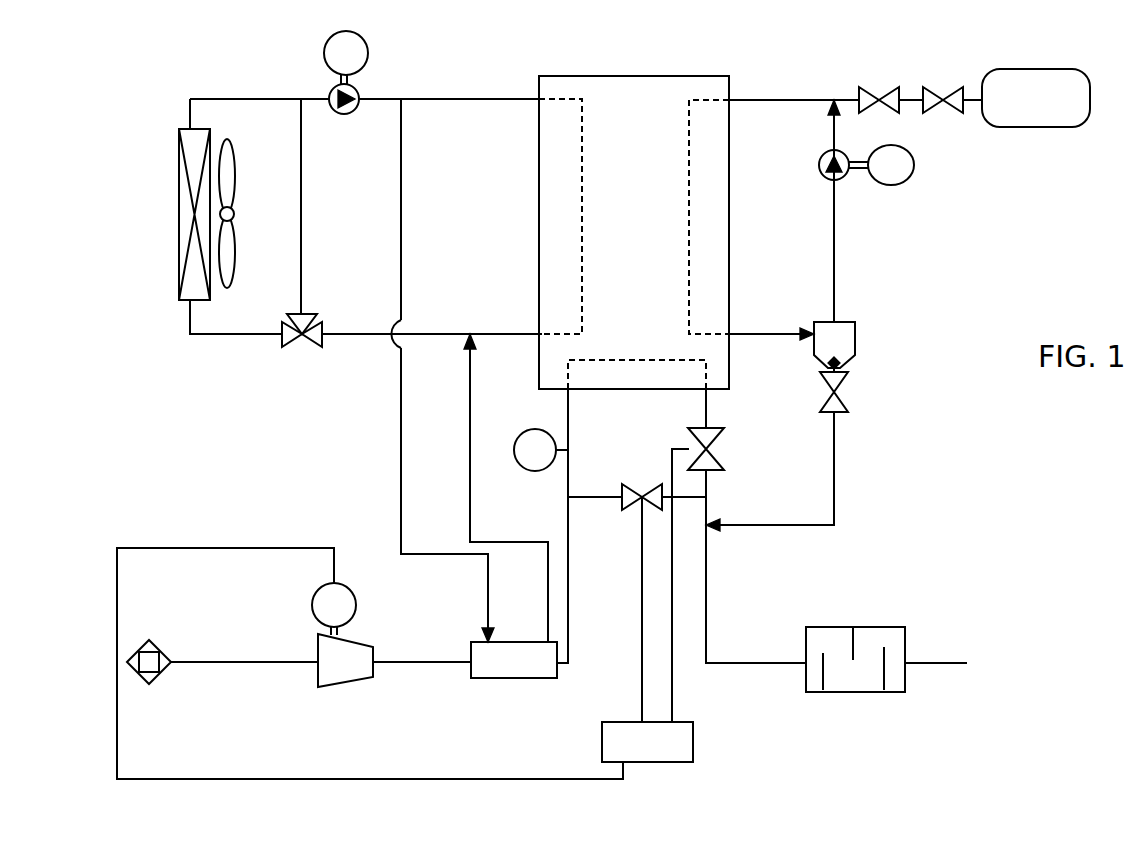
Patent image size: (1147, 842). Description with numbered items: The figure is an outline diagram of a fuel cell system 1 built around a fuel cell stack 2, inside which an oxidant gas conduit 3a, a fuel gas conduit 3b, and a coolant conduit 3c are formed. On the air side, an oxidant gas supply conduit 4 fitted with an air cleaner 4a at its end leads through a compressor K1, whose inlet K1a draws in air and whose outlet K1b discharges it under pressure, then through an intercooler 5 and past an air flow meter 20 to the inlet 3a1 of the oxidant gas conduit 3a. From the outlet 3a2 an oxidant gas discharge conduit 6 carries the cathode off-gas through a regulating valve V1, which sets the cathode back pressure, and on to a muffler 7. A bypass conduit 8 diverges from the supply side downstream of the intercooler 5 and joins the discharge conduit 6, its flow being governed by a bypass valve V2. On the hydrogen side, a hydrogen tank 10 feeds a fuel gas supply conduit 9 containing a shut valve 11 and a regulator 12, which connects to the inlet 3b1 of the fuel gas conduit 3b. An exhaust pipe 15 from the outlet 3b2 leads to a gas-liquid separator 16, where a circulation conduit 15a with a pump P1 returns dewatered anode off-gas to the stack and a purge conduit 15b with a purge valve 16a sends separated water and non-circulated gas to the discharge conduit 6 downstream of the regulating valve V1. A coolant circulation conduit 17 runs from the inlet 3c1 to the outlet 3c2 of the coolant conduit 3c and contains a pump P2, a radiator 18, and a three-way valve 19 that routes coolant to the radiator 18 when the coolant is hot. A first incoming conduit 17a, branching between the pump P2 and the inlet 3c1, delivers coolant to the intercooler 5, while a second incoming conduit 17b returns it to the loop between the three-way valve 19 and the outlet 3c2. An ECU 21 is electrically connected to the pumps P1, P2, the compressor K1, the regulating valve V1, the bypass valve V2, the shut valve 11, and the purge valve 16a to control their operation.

The fuel cell system 1 is at (1031, 775).
The fuel cell stack 2 is at (729, 76).
The oxidant gas conduit 3a is at (618, 358).
The fuel gas conduit 3b is at (692, 193).
The coolant conduit 3c is at (583, 223).
The inlet of the oxidant gas conduit 3a1 is at (568, 389).
The outlet of the oxidant gas conduit 3a2 is at (706, 389).
The inlet of the fuel gas conduit 3b1 is at (729, 100).
The outlet of the fuel gas conduit 3b2 is at (729, 334).
The inlet of the coolant conduit 3c1 is at (539, 99).
The outlet of the coolant conduit 3c2 is at (539, 334).
The oxidant gas supply conduit 4 is at (425, 662).
The air cleaner 4a is at (155, 647).
The intercooler 5 is at (487, 680).
The oxidant gas discharge conduit 6 is at (707, 575).
The muffler 7 is at (877, 627).
The bypass conduit 8 is at (583, 496).
The fuel gas supply conduit 9 is at (765, 100).
The hydrogen tank 10 is at (1028, 69).
The shut valve 11 is at (943, 100).
The regulator 12 is at (879, 100).
The exhaust pipe 15 is at (762, 334).
The circulation conduit 15a is at (838, 268).
The purge conduit 15b is at (838, 476).
The gas-liquid separator 16 is at (855, 322).
The purge valve 16a is at (836, 389).
The coolant circulation conduit 17 is at (448, 99).
The first incoming conduit 17a is at (401, 500).
The second incoming conduit 17b is at (470, 495).
The radiator 18 is at (179, 143).
The three-way valve 19 is at (300, 338).
The air flow meter 20 is at (520, 467).
The ECU 21 is at (693, 722).
The compressor K1 is at (348, 642).
The inlet of the compressor K1a is at (315, 658).
The outlet of the compressor K1b is at (373, 662).
The pump P1 is at (845, 176).
The pump P2 is at (357, 88).
The regulating valve V1 is at (707, 449).
The bypass valve V2 is at (640, 500).